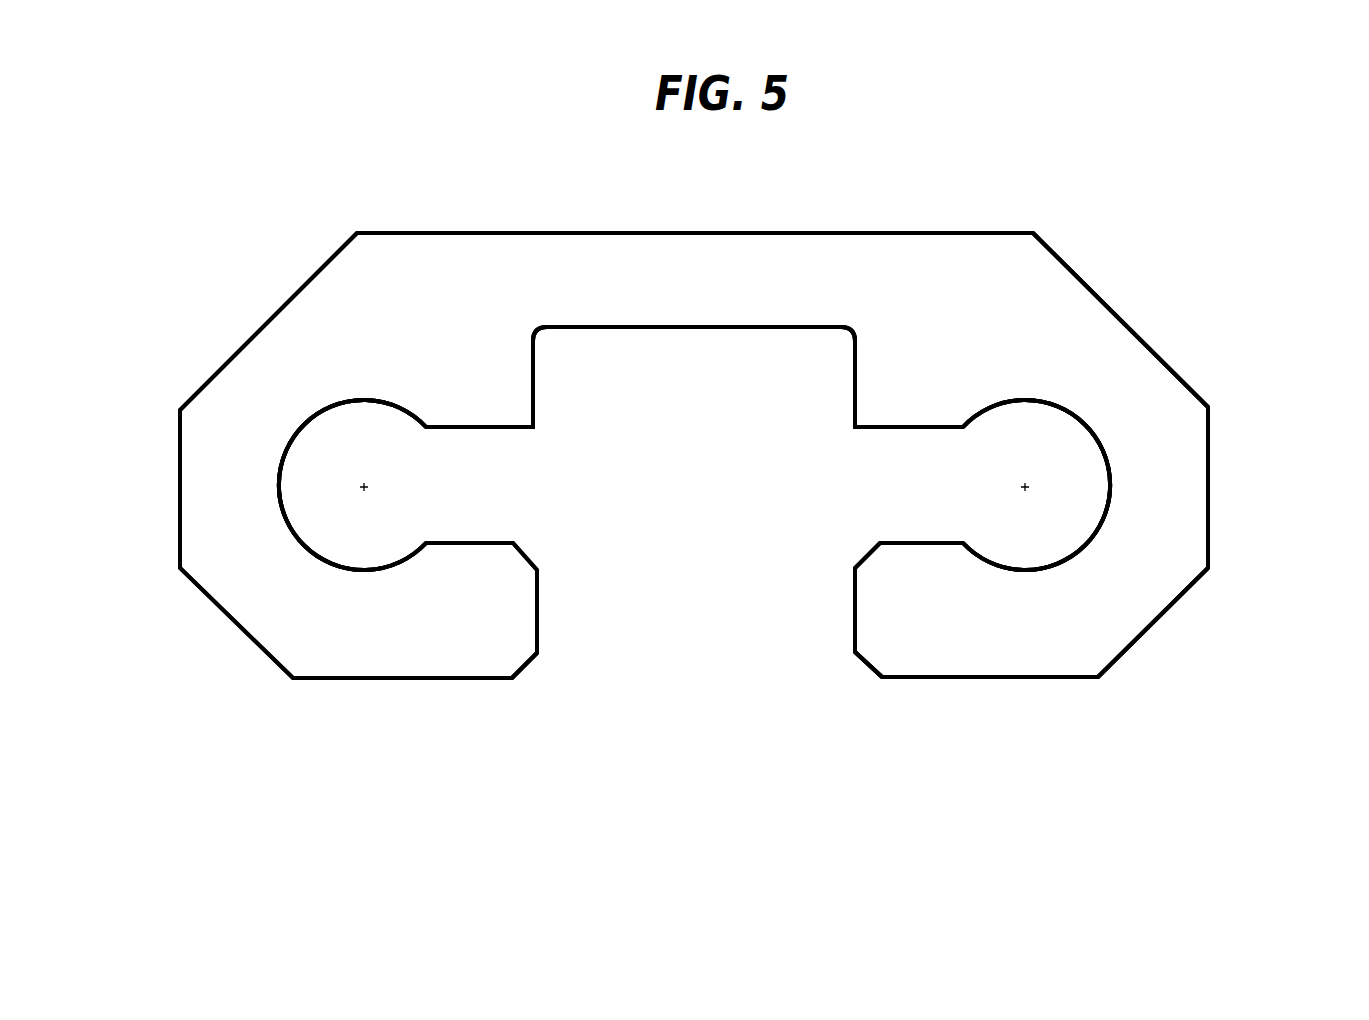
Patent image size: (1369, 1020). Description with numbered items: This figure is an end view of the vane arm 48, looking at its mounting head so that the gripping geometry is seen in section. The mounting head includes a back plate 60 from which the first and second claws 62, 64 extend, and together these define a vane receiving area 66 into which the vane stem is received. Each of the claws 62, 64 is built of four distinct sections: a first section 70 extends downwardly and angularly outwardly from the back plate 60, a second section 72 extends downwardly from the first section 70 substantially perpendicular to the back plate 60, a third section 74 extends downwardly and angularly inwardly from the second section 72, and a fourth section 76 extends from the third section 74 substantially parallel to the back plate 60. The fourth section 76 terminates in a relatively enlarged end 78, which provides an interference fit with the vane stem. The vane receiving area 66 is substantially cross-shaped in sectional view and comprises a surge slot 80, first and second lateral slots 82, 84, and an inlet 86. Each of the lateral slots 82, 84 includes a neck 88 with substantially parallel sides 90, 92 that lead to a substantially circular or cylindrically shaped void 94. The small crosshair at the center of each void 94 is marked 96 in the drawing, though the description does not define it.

The vane arm 48 is at (1113, 227).
The back plate 60 is at (848, 270).
The first claw 62 is at (157, 513).
The second claw 64 is at (1235, 517).
The vane receiving area 66 is at (697, 720).
The first section 70 is at (1068, 315).
The second section 72 is at (1178, 460).
The third section 74 is at (1167, 593).
The fourth section 76 is at (1055, 665).
The enlarged end 78 is at (871, 645).
The surge slot 80 is at (716, 328).
The first lateral slot 82 is at (318, 530).
The second lateral slot 84 is at (1053, 532).
The inlet 86 is at (604, 620).
The neck 88 is at (524, 483).
The side 90 is at (505, 430).
The side 92 is at (510, 543).
The cylindrically shaped void 94 is at (300, 441).
The aperture center 96 is at (366, 486).